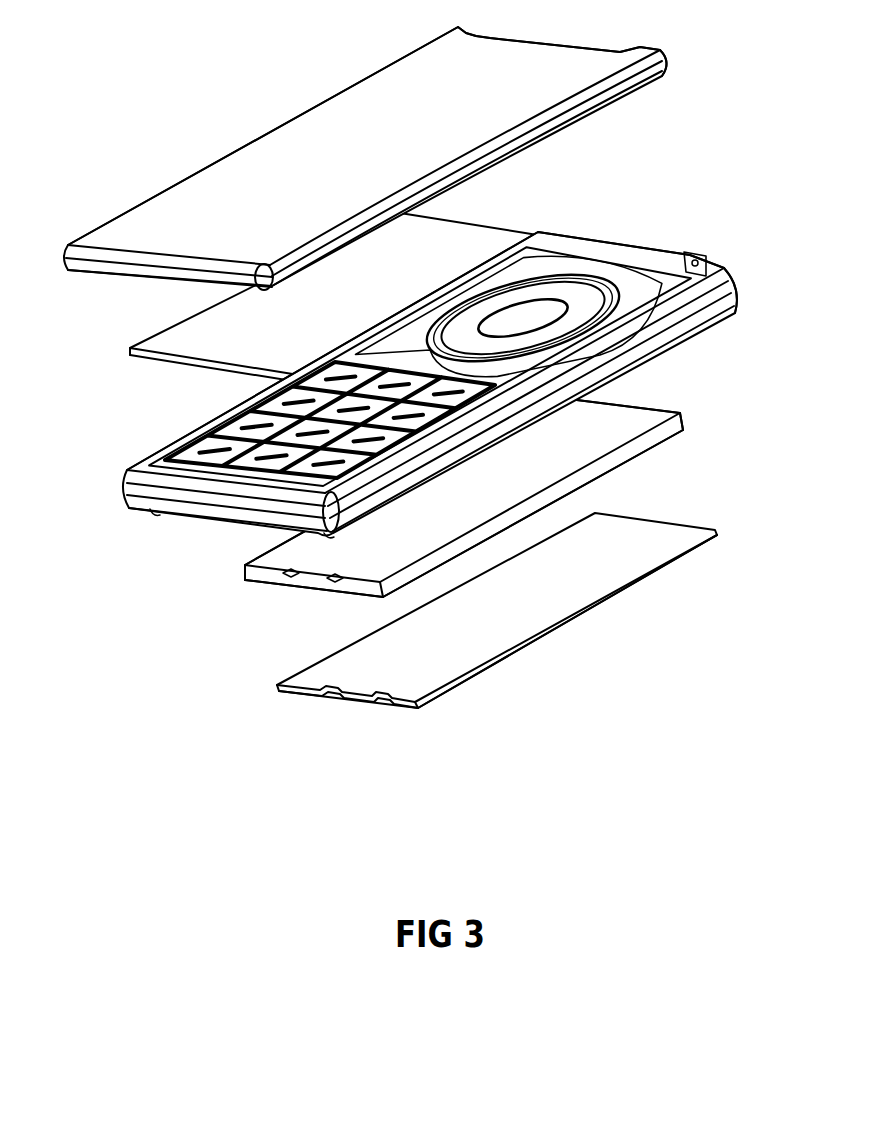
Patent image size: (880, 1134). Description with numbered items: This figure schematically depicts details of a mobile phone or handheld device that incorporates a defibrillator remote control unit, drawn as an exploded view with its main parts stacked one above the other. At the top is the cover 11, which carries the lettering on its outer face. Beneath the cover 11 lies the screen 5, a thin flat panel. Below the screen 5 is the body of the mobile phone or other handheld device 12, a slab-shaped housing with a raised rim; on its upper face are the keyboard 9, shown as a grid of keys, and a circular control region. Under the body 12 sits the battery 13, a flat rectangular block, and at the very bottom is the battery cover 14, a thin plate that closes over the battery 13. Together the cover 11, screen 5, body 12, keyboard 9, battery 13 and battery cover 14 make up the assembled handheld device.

The cover 11 is at (656, 84).
The screen 5 is at (484, 237).
The body of the mobile phone or other handheld device 12 is at (732, 316).
The keyboard 9 is at (196, 452).
The battery 13 is at (656, 418).
The battery cover 14 is at (659, 545).